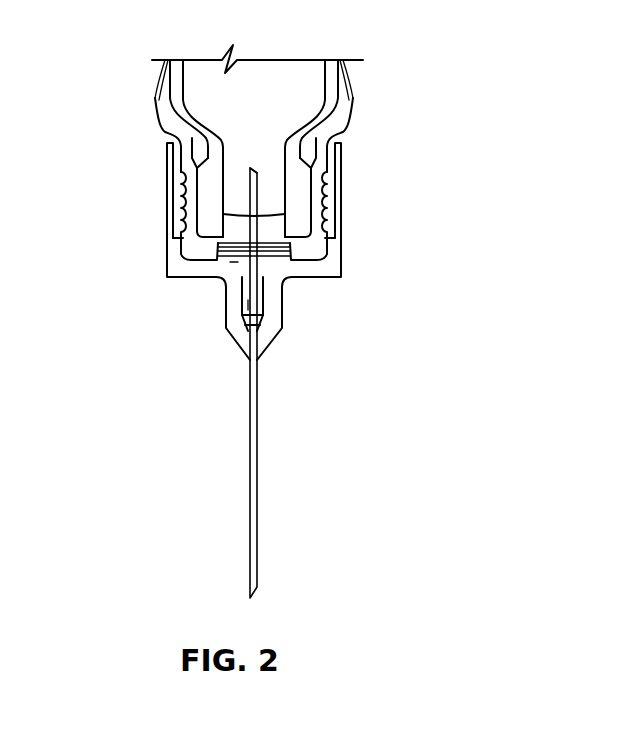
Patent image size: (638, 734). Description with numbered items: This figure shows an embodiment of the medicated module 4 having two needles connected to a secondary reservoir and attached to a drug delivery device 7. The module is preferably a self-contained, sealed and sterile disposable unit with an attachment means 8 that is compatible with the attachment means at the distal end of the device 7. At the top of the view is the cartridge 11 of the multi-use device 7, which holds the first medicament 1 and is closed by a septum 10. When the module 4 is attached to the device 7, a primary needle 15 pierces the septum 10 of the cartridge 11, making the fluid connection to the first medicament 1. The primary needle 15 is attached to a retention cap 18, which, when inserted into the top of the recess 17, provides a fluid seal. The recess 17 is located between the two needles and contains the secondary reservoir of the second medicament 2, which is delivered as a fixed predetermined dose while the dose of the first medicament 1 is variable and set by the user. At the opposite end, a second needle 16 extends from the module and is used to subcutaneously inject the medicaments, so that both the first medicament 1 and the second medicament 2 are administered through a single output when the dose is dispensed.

The first medicament 1 is at (303, 78).
The cartridge 11 is at (332, 62).
The drug delivery device 7 is at (338, 135).
The attachment means 8 is at (328, 212).
The septum 10 is at (303, 257).
The primary needle 15 is at (258, 172).
The second needle 16 is at (260, 483).
The second medicament 2 is at (257, 303).
The recess 17 is at (250, 288).
The retention cap 18 is at (232, 258).
The medicated module 4 is at (107, 603).